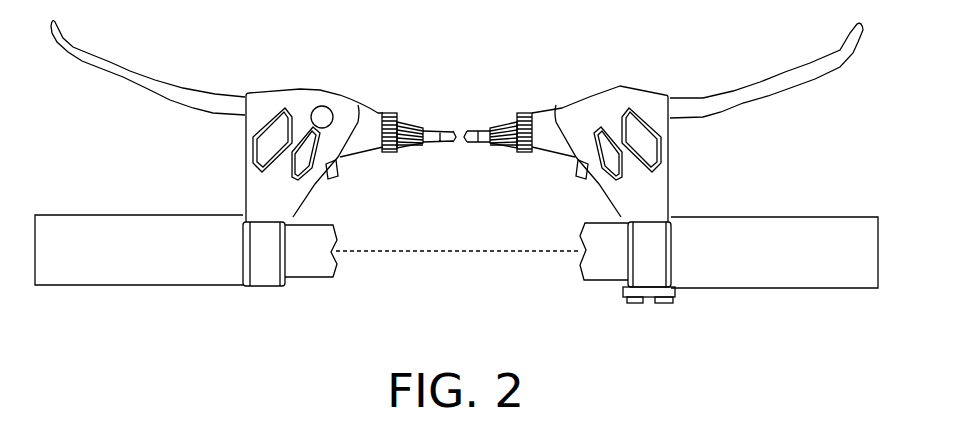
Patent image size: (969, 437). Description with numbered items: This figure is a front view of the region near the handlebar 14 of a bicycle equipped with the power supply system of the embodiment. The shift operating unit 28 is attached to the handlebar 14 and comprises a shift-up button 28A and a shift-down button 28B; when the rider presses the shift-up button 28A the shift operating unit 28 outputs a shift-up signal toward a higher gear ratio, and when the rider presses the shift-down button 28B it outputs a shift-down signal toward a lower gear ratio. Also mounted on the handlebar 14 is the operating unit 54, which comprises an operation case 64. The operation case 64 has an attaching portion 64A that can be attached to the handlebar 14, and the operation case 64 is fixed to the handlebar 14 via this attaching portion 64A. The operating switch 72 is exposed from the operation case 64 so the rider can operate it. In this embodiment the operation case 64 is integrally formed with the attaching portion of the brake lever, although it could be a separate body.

The handlebar 14 is at (780, 216).
The shift operating unit 28 is at (613, 292).
The shift-up button 28A is at (633, 305).
The shift-down button 28B is at (661, 305).
The operating unit 54 is at (236, 175).
The operation case 64 is at (288, 197).
The attaching portion 64A is at (263, 273).
The operating switch 72 is at (323, 105).